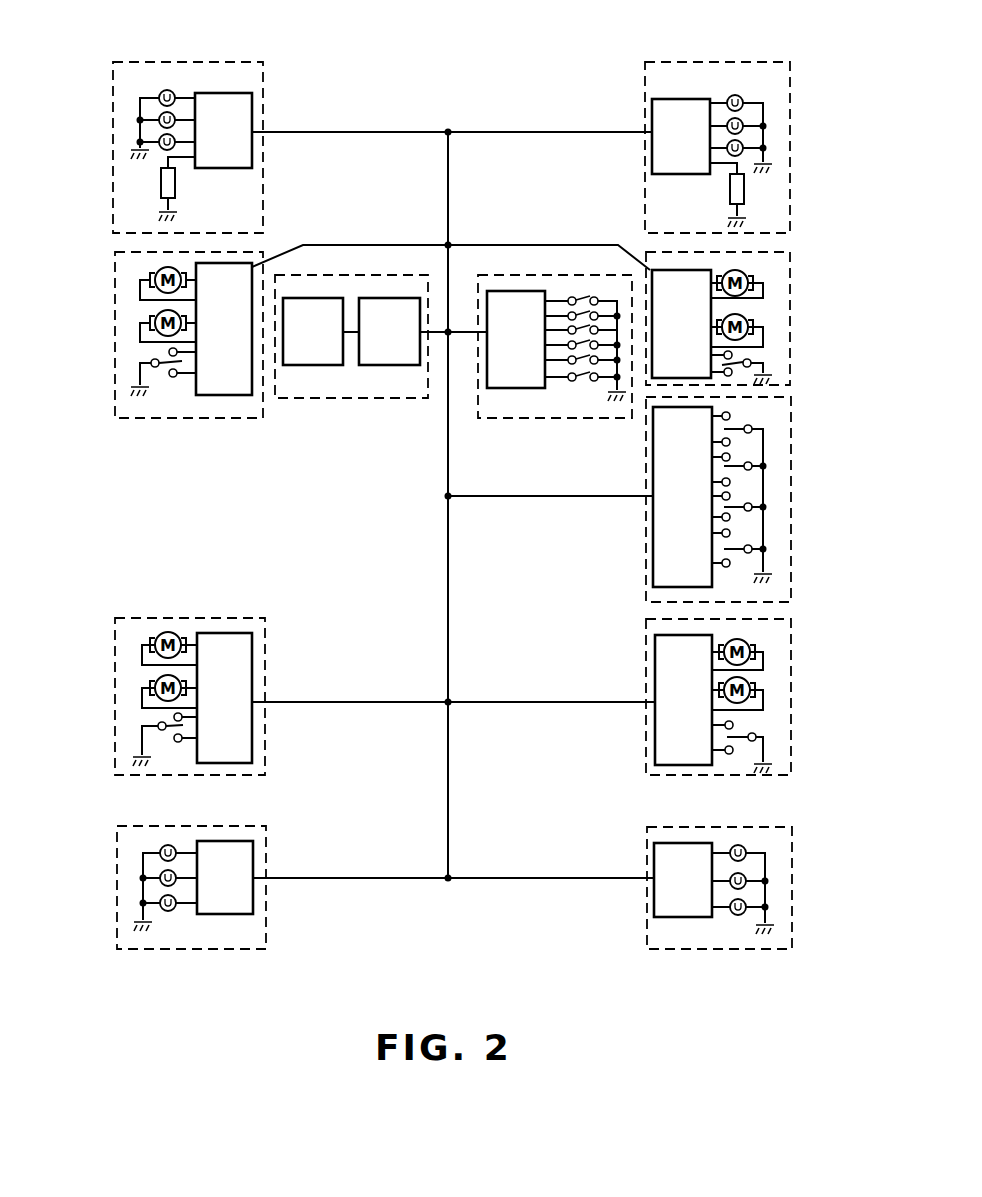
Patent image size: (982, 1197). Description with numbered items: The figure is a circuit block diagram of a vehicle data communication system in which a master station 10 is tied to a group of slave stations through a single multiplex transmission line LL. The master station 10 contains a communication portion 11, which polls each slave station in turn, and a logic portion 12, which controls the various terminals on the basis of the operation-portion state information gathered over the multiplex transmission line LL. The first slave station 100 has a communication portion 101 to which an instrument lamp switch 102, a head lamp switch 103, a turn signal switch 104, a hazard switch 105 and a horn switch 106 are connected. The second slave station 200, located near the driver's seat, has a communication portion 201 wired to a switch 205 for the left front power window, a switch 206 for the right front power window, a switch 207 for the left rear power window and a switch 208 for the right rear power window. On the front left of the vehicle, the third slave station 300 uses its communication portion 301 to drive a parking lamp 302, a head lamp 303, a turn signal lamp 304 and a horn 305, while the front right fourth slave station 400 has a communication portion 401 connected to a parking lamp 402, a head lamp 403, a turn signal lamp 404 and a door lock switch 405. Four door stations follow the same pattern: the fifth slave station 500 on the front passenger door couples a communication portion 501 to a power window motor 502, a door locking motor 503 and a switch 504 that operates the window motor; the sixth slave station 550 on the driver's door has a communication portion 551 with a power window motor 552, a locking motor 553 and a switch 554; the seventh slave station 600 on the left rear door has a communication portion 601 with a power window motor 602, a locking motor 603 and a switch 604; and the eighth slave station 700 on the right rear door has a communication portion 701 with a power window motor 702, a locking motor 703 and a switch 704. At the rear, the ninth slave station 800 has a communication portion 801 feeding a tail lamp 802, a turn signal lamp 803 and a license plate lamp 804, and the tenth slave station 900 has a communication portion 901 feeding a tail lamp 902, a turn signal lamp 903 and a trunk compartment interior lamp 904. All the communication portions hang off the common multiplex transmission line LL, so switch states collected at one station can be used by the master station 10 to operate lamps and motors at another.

The master station 10 is at (366, 400).
The communication portion 11 is at (375, 366).
The logic portion 12 is at (300, 367).
The first slave station 100 is at (556, 421).
The communication portion 101 is at (510, 388).
The instrument lamp switch 102 is at (594, 297).
The head lamp switch 103 is at (570, 298).
The turn signal switch 104 is at (571, 364).
The hazard switch 105 is at (594, 364).
The horn switch 106 is at (609, 390).
The second slave station 200 is at (645, 567).
The communication portion 201 is at (653, 537).
The switch 205 is at (733, 425).
The switch 206 is at (733, 468).
The switch 207 is at (733, 506).
The switch 208 is at (733, 548).
The third slave station 300 is at (268, 88).
The communication portion 301 is at (207, 78).
The parking lamp 302 is at (159, 96).
The head lamp 303 is at (159, 119).
The turn signal lamp 304 is at (159, 142).
The horn 305 is at (175, 188).
The fourth slave station 400 is at (870, 50).
The communication portion 401 is at (652, 165).
The parking lamp 402 is at (741, 97).
The head lamp 403 is at (741, 122).
The turn signal lamp 404 is at (741, 145).
The door lock switch 405 is at (730, 190).
The fifth slave station 500 is at (193, 421).
The communication portion 501 is at (253, 390).
The power window motor 502 is at (156, 272).
The motor 503 is at (156, 315).
The switch 504 is at (169, 351).
The sixth slave station 550 is at (645, 250).
The communication portion 551 is at (711, 270).
The power window motor 552 is at (746, 275).
The motor 553 is at (746, 320).
The switch 554 is at (750, 360).
The seventh slave station 600 is at (228, 779).
The communication portion 601 is at (252, 748).
The power window motor 602 is at (156, 638).
The motor 603 is at (156, 682).
The switch 604 is at (174, 717).
The eighth slave station 700 is at (735, 816).
The communication portion 701 is at (655, 750).
The power window motor 702 is at (747, 645).
The motor 703 is at (747, 685).
The switch 704 is at (742, 733).
The ninth slave station 800 is at (201, 954).
The communication portion 801 is at (253, 903).
The tail lamp 802 is at (160, 850).
The turn signal lamp 803 is at (160, 877).
The license plate lamp 804 is at (160, 902).
The tenth slave station 900 is at (700, 954).
The communication portion 901 is at (654, 905).
The tail lamp 902 is at (746, 850).
The turn signal lamp 903 is at (746, 880).
The trunk compartment interior lamp 904 is at (746, 905).
The multiplex transmission line LL is at (449, 612).